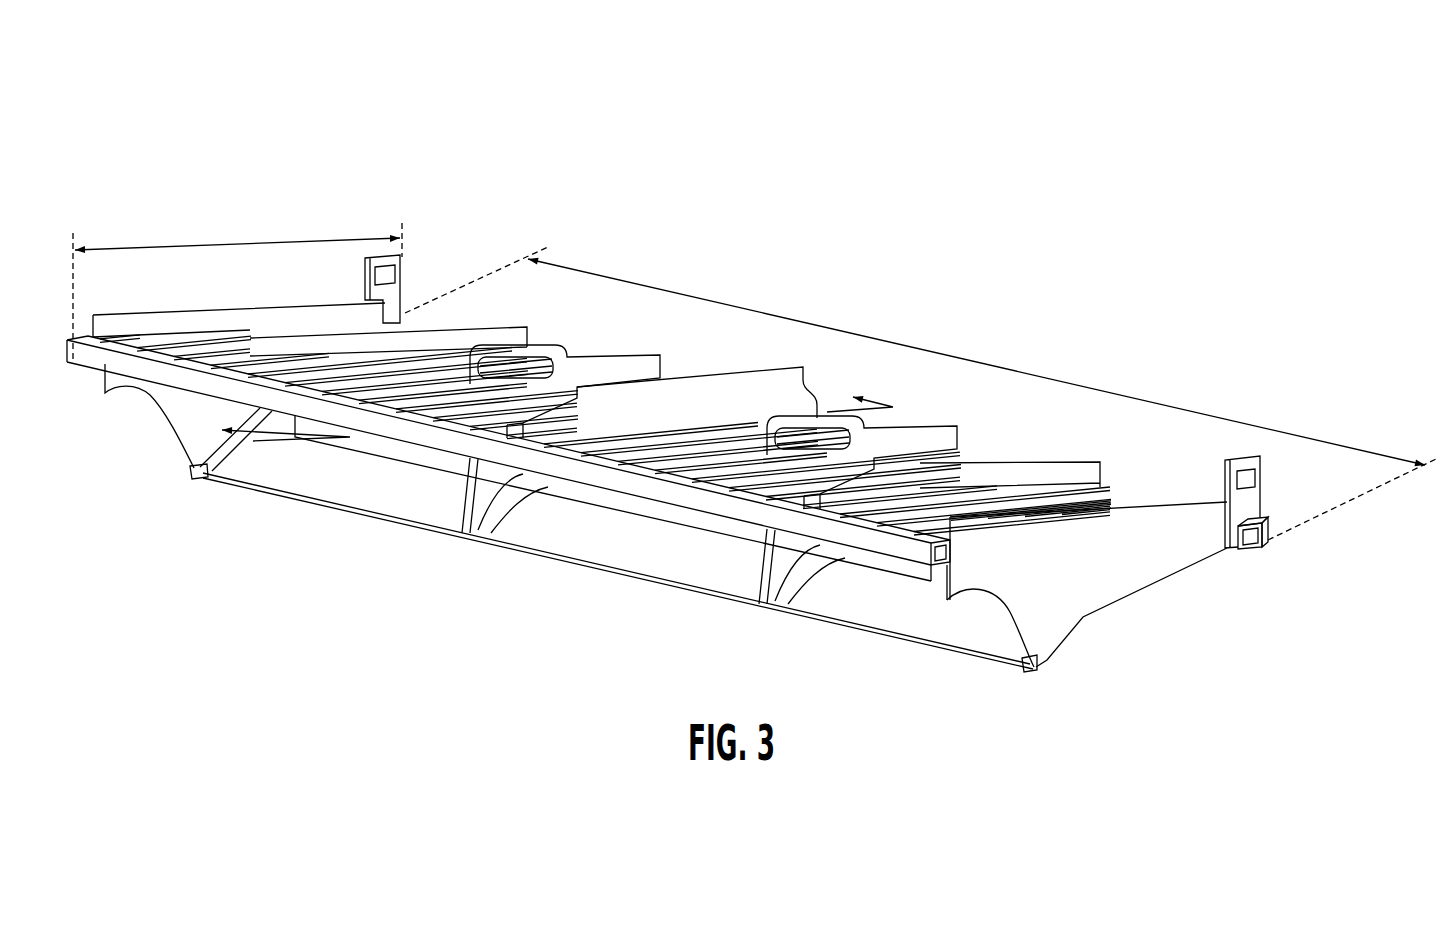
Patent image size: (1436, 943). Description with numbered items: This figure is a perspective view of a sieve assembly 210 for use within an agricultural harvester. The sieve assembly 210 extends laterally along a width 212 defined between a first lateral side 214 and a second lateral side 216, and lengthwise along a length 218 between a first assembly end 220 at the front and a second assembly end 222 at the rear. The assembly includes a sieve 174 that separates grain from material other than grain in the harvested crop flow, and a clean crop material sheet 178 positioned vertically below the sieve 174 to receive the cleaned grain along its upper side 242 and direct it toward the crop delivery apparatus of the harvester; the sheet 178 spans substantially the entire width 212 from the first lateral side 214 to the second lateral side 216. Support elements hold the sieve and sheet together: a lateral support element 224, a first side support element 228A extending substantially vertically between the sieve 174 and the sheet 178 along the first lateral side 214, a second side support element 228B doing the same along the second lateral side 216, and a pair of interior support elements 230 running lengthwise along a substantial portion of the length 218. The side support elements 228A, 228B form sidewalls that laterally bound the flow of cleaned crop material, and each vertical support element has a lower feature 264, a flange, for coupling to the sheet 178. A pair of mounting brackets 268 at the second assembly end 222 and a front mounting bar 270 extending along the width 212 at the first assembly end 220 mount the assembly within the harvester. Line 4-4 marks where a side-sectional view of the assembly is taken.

The sieve assembly 210 is at (436, 137).
The width 212 is at (836, 327).
The first lateral side 214 is at (260, 303).
The second lateral side 216 is at (1117, 543).
The length 218 is at (151, 243).
The first assembly end 220 is at (665, 622).
The second assembly end 222 is at (430, 327).
The lateral support element 224 is at (1253, 547).
The first side support element 228A is at (193, 428).
The second side support element 228B is at (1025, 643).
The interior support elements 230 is at (785, 552).
The upper side 242 is at (333, 478).
The lower feature 264 is at (463, 533).
The mounting brackets 268 is at (393, 290).
The front mounting bar 270 is at (940, 570).
The sieve 174 is at (1107, 497).
The clean crop material sheet 178 is at (730, 605).
The section line 4 is at (548, 405).